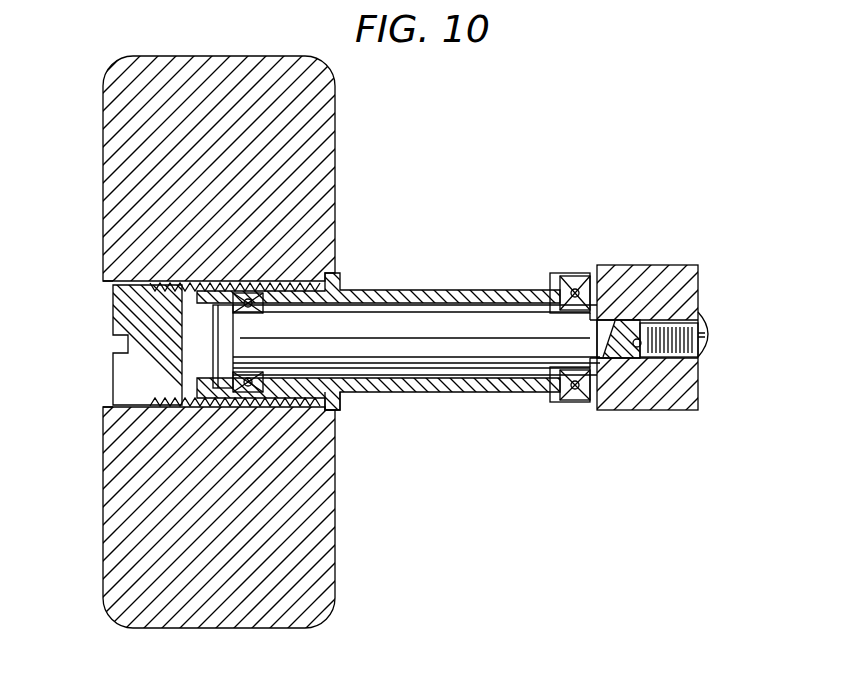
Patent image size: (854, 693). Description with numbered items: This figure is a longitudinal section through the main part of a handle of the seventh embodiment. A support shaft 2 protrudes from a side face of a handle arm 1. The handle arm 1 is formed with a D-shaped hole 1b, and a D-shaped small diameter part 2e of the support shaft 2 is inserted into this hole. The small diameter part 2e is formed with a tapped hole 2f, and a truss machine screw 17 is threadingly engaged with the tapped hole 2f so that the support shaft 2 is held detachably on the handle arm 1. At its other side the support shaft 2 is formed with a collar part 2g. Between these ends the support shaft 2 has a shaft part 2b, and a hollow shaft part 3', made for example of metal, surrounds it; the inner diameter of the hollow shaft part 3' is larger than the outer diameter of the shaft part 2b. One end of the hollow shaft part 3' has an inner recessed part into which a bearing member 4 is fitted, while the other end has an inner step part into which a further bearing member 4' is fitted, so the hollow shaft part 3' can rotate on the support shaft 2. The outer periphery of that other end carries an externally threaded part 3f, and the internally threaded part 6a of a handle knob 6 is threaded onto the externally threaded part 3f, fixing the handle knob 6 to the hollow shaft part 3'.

The handle arm 1 is at (661, 266).
The D-shaped hole 1b is at (560, 332).
The support shaft 2 is at (429, 305).
The shaft part 2b is at (404, 318).
The small diameter part 2e is at (610, 327).
The tapped hole 2f is at (632, 345).
The collar part 2g is at (197, 361).
The hollow shaft part 3' is at (350, 346).
The externally threaded part 3f is at (220, 280).
The bearing member 4 is at (576, 379).
The bearing member 4' is at (350, 346).
The handle knob 6 is at (337, 109).
The internally threaded part 6a is at (340, 403).
The truss machine screw 17 is at (708, 350).